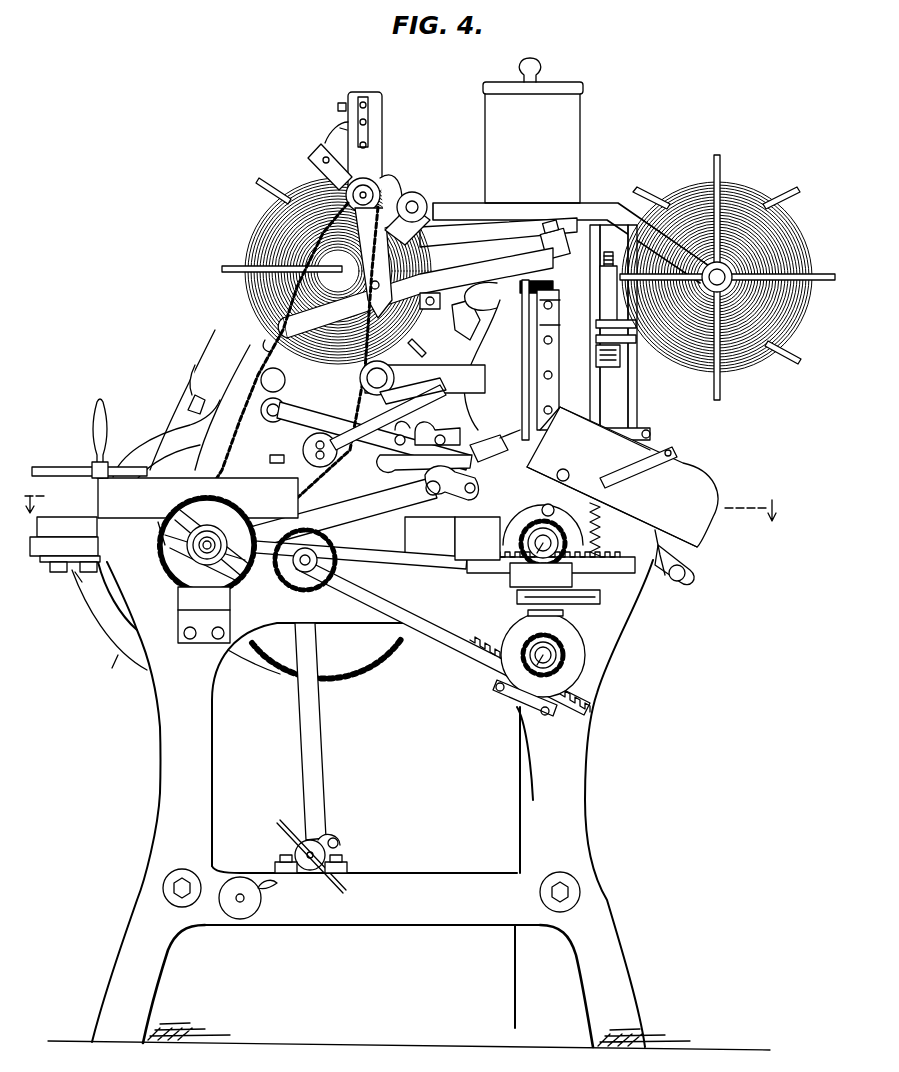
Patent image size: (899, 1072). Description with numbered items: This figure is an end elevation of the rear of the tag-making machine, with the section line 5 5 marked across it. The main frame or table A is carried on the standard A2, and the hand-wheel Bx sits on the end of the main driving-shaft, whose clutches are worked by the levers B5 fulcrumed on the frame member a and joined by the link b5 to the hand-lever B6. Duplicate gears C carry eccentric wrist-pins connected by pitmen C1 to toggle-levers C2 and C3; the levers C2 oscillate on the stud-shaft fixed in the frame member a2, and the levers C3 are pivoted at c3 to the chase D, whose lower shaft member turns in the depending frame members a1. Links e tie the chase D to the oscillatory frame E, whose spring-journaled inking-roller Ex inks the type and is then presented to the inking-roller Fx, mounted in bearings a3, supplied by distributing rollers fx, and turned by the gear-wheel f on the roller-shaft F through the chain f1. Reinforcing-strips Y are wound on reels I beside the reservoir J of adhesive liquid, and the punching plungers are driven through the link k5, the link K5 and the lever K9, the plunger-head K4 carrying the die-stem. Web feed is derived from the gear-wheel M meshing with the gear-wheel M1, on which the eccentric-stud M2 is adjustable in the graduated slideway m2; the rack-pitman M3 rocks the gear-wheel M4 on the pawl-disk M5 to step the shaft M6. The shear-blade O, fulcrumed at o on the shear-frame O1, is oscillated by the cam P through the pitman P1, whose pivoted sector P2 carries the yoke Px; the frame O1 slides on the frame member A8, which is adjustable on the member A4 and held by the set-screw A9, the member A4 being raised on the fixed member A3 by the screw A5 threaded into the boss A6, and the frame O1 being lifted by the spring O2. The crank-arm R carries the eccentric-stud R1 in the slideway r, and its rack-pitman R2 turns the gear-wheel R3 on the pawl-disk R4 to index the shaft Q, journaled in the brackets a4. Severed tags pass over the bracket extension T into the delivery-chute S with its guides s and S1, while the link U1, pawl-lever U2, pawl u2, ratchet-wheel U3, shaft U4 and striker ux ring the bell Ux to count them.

The main frame A is at (198, 498).
The standard A2 is at (409, 712).
The vertical fixed frame member A3 is at (658, 404).
The frame member A4 is at (616, 315).
The screw A5 is at (608, 252).
The boss A6 is at (606, 372).
The frame member A8 is at (575, 418).
The set-screw A9 is at (652, 436).
The clutch levers B5 is at (65, 549).
The hand-lever B6 is at (48, 564).
The link b5 is at (78, 575).
The hand-wheel Bx is at (146, 543).
The frame member a is at (67, 527).
The depending frame members a1 is at (477, 538).
The frame member a2 is at (243, 400).
The bearings a3 is at (338, 138).
The brackets a4 is at (590, 510).
The gears C is at (315, 658).
The pitmen C1 is at (388, 414).
The toggle-levers C2 is at (353, 378).
The toggle-levers C3 is at (425, 379).
The pivotal connection c3 is at (470, 353).
The chase D is at (478, 350).
The oscillatory frame E is at (197, 395).
The inking-roller Ex is at (425, 193).
The links e is at (424, 460).
The roller-shaft F is at (386, 180).
The inking-roller Fx is at (405, 185).
The gear-wheel f is at (363, 183).
The ink-distributing rollers fx is at (360, 92).
The chain f1 is at (261, 334).
The reels I is at (372, 263).
The reservoir J is at (533, 130).
The plunger-head K4 is at (437, 427).
The link k5 is at (401, 427).
The link K5 is at (665, 578).
The lever K9 is at (686, 560).
The gear-wheel M is at (160, 530).
The gear-wheel M1 is at (443, 636).
The eccentric-stud M2 is at (308, 545).
The slideway m2 is at (303, 580).
The rack-pitman M3 is at (472, 660).
The gear-wheel M4 is at (565, 640).
The pawl-disk M5 is at (540, 645).
The shaft M6 is at (525, 681).
The shear-blade O is at (524, 360).
The shear-frame O1 is at (525, 600).
The spring O2 is at (551, 552).
The fulcrum o is at (544, 508).
The cam P is at (240, 512).
The pitman P1 is at (343, 513).
The pivoted sector P2 is at (452, 483).
The yoke Px is at (495, 452).
The shaft Q is at (541, 575).
The crank-arm R is at (160, 555).
The eccentric-stud R1 is at (210, 528).
The rack-pitman R2 is at (378, 568).
The gear-wheel R3 is at (527, 532).
The pawl-disk R4 is at (561, 542).
The slideway r is at (165, 576).
The delivery-chute S is at (622, 477).
The guide S1 is at (638, 467).
The guide s is at (562, 465).
The bracket extension T is at (532, 405).
The link U1 is at (320, 745).
The pawl-lever U2 is at (346, 846).
The ratchet-wheel U3 is at (286, 855).
The shaft U4 is at (310, 870).
The bell Ux is at (252, 908).
The striker ux is at (305, 847).
The pawl u2 is at (318, 832).
The reinforcing-strips Y is at (262, 224).
The section line 5 is at (398, 499).